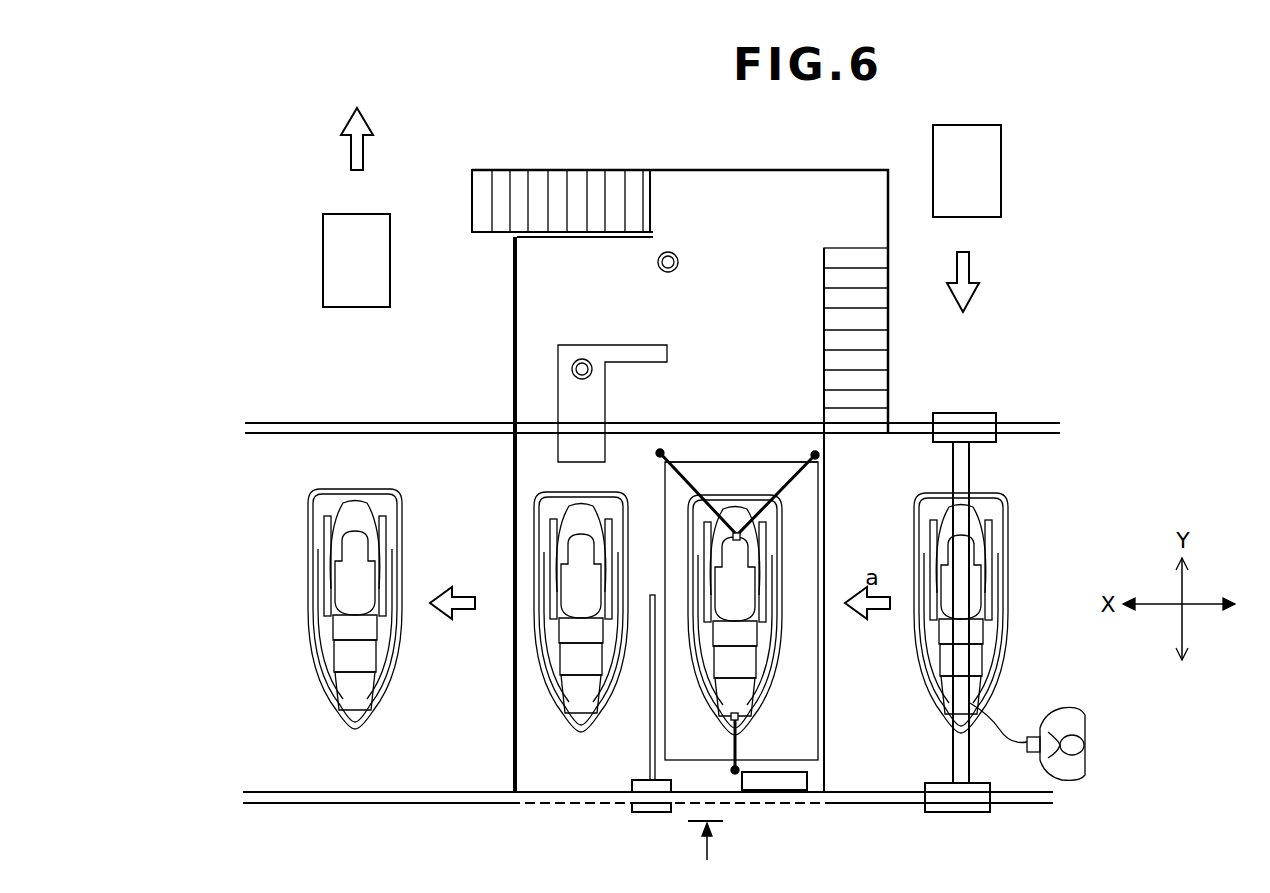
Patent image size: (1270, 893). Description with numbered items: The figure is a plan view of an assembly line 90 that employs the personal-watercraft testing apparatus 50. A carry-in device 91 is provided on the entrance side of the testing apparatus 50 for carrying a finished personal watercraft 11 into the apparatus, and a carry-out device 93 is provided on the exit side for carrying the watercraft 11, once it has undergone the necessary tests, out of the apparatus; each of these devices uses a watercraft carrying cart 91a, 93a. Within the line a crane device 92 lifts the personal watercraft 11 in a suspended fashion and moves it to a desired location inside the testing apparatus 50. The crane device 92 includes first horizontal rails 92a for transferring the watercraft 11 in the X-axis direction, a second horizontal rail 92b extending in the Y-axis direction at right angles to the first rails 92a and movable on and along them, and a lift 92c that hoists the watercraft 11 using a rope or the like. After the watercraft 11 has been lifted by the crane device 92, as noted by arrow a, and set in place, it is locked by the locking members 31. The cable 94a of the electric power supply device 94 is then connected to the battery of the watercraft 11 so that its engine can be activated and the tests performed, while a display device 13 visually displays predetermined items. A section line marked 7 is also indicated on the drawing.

The section line for FIG. 7 is at (715, 843).
The personal watercraft 11 is at (1012, 545).
The display device 13 is at (810, 780).
The locking members 31 is at (683, 477).
The personal-watercraft testing apparatus 50 is at (655, 168).
The assembly line 90 is at (450, 168).
The carry-in device 91 is at (1018, 268).
The watercraft carrying cart 91a is at (1013, 172).
The crane device 92 is at (1018, 458).
The first horizontal rails 92a is at (1033, 422).
The second horizontal rail 92b is at (975, 473).
The lift 92c is at (985, 686).
The carry-out device 93 is at (296, 345).
The watercraft carrying cart 93a is at (316, 250).
The electric power supply device 94 is at (633, 757).
The cable 94a is at (690, 505).